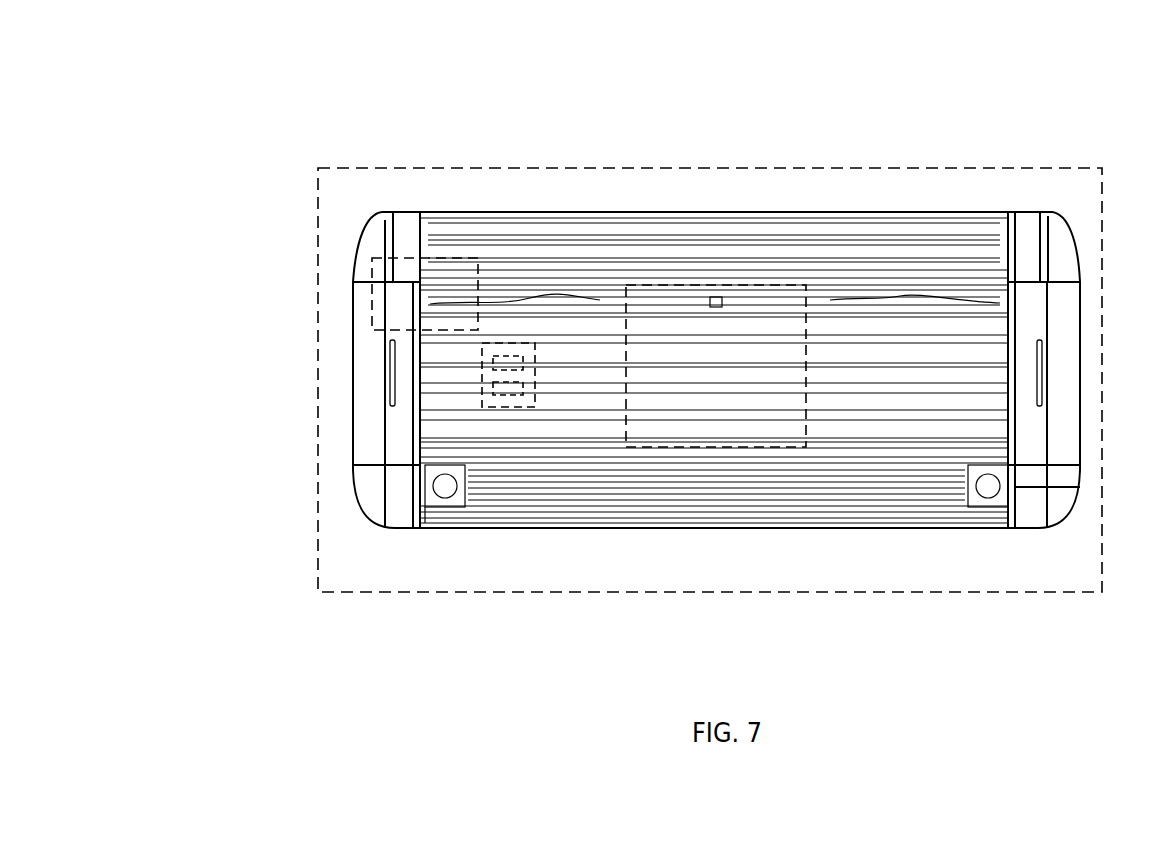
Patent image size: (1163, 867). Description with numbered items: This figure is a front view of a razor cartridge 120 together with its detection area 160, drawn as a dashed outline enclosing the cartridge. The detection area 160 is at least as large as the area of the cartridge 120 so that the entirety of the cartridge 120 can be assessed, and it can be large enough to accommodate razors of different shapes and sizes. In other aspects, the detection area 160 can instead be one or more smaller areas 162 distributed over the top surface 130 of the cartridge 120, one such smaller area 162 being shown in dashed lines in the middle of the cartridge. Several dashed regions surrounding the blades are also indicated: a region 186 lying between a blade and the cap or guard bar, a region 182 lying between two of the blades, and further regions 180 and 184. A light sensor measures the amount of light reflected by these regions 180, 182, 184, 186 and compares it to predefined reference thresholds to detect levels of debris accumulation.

The cartridge 120 is at (1050, 118).
The top surface 130 is at (1062, 440).
The detection area 160 is at (457, 593).
The area 162 is at (780, 285).
The region 180 is at (535, 407).
The region 182 is at (493, 363).
The region 184 is at (493, 390).
The region 186 is at (360, 272).